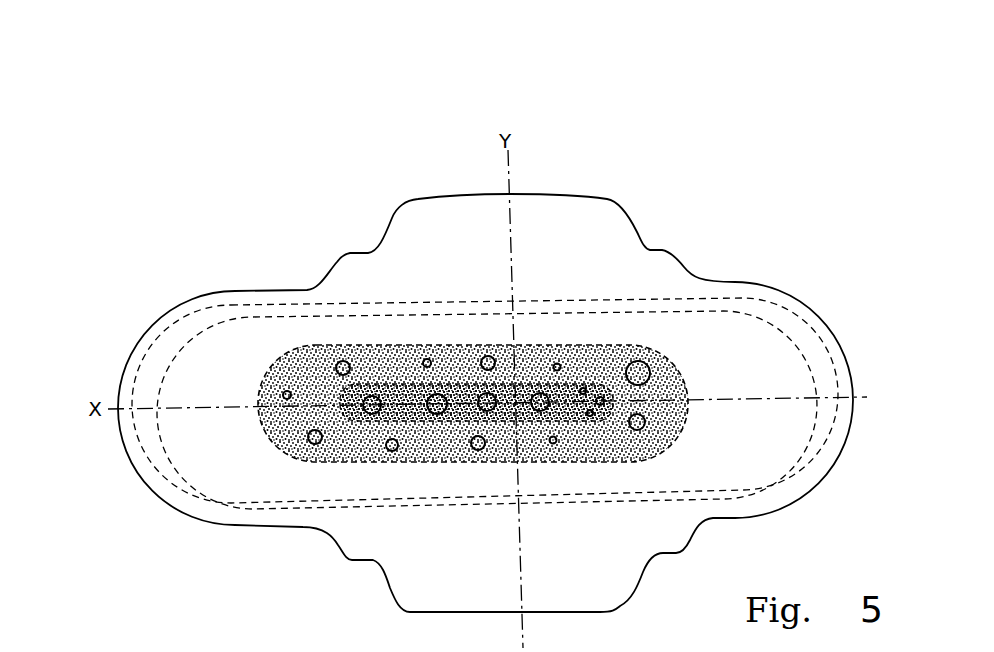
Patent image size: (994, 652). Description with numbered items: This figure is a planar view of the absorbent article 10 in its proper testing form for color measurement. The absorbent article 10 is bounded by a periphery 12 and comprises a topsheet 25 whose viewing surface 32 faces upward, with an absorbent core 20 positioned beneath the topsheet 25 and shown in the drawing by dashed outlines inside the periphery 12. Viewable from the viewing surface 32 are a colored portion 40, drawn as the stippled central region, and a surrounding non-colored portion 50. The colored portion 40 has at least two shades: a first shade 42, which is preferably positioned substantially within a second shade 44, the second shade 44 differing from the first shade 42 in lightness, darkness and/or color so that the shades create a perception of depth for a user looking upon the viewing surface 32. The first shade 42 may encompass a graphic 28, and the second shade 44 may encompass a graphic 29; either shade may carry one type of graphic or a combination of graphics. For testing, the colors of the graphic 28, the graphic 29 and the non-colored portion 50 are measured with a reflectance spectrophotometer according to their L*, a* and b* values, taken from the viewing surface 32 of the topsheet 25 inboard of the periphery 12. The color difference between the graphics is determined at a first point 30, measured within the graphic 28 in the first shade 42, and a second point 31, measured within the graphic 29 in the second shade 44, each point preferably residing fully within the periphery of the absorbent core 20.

The absorbent article 10 is at (663, 130).
The periphery 12 is at (787, 508).
The absorbent core 20 is at (185, 427).
The topsheet 25 is at (767, 445).
The graphic 28 is at (425, 388).
The graphic 29 is at (657, 360).
The first point 30 is at (437, 394).
The second point 31 is at (636, 362).
The viewing surface 32 is at (196, 350).
The colored portion 40 is at (268, 438).
The first shade 42 is at (372, 412).
The second shade 44 is at (303, 373).
The non-colored portion 50 is at (192, 387).